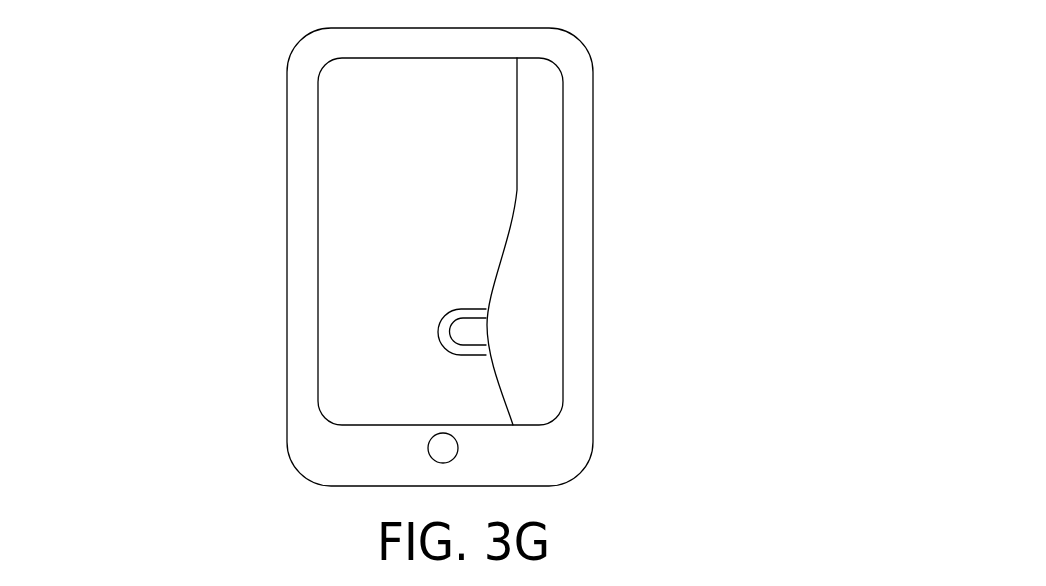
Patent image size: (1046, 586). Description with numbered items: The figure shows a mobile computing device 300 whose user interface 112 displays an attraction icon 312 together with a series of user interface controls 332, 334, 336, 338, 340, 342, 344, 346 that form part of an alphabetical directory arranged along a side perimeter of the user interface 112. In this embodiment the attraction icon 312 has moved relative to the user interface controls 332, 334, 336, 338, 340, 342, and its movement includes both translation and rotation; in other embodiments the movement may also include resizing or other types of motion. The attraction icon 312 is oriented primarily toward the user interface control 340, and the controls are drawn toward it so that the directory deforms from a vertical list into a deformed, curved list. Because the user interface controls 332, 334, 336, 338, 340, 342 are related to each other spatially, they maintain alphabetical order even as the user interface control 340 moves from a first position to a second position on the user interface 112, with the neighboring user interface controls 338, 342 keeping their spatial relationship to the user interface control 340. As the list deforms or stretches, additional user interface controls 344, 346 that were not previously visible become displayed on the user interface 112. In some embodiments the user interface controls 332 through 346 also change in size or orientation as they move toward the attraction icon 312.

The mobile computing device 300 is at (287, 230).
The user interface 112 is at (357, 247).
The attraction icon 312 is at (438, 338).
The user interface control 332 is at (540, 212).
The user interface control 334 is at (528, 239).
The user interface control 336 is at (518, 272).
The user interface control 338 is at (507, 301).
The user interface control 340 is at (510, 325).
The user interface control 342 is at (518, 352).
The user interface control 344 is at (526, 384).
The user interface control 346 is at (545, 413).